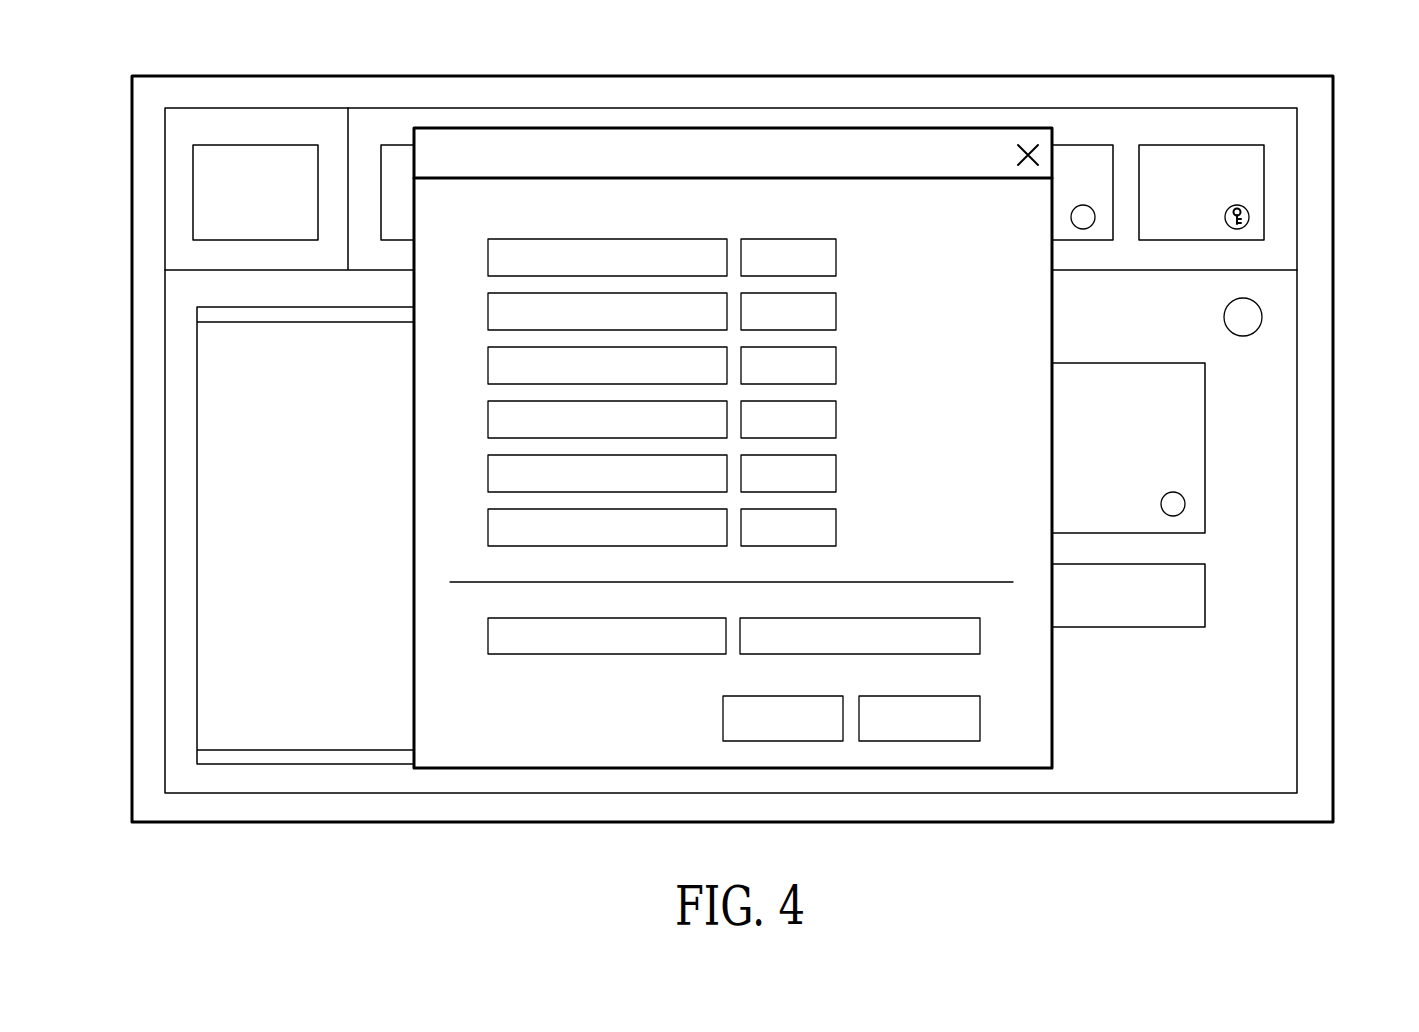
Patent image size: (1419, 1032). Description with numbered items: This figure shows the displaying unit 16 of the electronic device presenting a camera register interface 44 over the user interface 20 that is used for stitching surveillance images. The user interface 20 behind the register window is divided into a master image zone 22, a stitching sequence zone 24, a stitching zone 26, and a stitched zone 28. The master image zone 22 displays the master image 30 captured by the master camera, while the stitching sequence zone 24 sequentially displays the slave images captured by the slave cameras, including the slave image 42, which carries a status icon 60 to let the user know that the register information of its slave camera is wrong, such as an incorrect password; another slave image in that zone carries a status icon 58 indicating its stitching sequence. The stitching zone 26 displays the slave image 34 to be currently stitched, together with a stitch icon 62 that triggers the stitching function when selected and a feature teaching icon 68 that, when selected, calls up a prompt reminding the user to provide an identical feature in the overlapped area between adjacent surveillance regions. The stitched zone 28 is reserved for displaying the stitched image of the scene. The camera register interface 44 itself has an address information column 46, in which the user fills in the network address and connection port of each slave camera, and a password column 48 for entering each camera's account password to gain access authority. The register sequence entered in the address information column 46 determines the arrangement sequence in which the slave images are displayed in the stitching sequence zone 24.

The displaying unit 16 is at (1333, 135).
The user interface 20 is at (188, 108).
The master image zone 22 is at (333, 120).
The stitching sequence zone 24 is at (400, 120).
The stitching zone 26 is at (1275, 413).
The stitched zone 28 is at (165, 722).
The master image 30 is at (257, 145).
The slave image 34 is at (1205, 472).
The slave image 42 is at (1193, 145).
The camera register interface 44 is at (897, 128).
The address information column 46 is at (775, 193).
The password column 48 is at (455, 693).
The status icon 58 is at (1083, 205).
The status icon 60 is at (1237, 205).
The stitch icon 62 is at (1205, 590).
The feature teaching icon 68 is at (1262, 308).